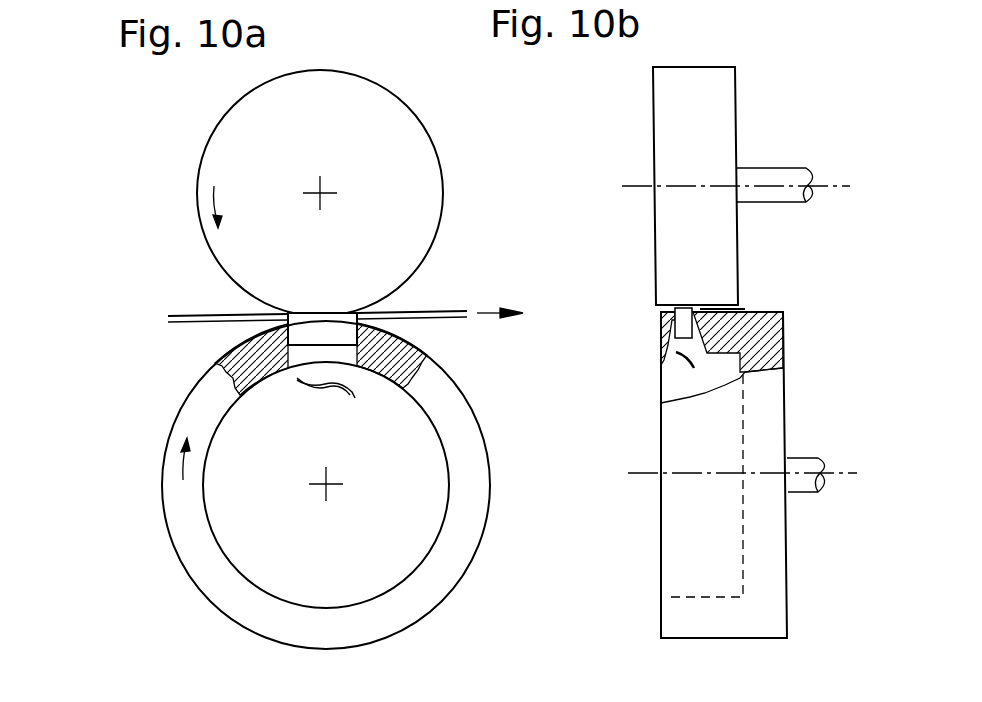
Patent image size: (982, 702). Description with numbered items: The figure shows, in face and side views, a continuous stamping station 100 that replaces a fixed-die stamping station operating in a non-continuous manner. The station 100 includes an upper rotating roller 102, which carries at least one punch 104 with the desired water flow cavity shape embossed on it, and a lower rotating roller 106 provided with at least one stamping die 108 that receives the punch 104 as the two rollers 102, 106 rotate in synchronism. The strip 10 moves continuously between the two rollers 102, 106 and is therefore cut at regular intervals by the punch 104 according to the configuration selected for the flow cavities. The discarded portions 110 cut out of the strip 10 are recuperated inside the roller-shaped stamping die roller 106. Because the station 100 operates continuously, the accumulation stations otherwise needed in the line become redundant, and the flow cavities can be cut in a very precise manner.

In FIG. 10A, the continuous stamping station 100 is at (130, 170).
In FIG. 10A, the rotating roller 102 is at (232, 250).
In FIG. 10B, the rotating roller 102 is at (723, 90).
In FIG. 10A, the strip 10 is at (447, 311).
In FIG. 10B, the strip 10 is at (743, 305).
In FIG. 10A, the stamping die 108 is at (300, 358).
In FIG. 10A, the rotating roller 106 is at (182, 532).
In FIG. 10B, the rotating roller 106 is at (773, 348).
In FIG. 10B, the punch 104 is at (683, 325).
In FIG. 10B, the discarded portions 110 is at (672, 360).